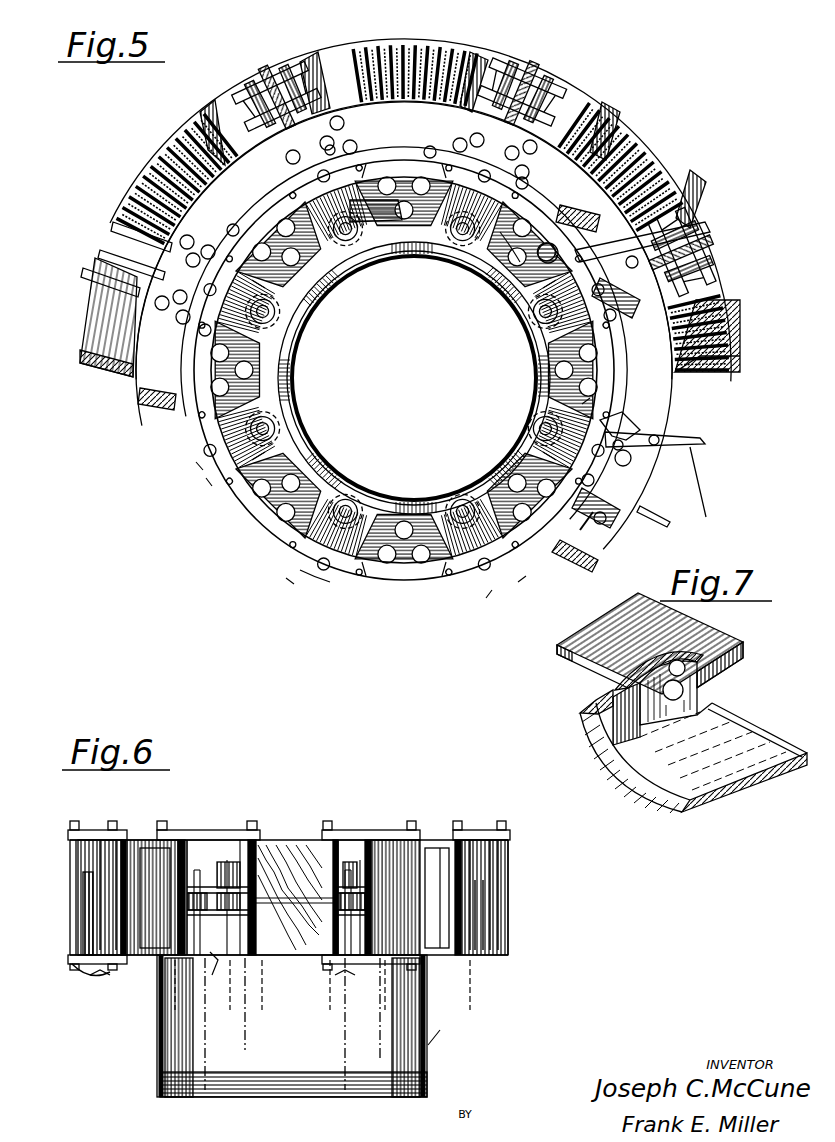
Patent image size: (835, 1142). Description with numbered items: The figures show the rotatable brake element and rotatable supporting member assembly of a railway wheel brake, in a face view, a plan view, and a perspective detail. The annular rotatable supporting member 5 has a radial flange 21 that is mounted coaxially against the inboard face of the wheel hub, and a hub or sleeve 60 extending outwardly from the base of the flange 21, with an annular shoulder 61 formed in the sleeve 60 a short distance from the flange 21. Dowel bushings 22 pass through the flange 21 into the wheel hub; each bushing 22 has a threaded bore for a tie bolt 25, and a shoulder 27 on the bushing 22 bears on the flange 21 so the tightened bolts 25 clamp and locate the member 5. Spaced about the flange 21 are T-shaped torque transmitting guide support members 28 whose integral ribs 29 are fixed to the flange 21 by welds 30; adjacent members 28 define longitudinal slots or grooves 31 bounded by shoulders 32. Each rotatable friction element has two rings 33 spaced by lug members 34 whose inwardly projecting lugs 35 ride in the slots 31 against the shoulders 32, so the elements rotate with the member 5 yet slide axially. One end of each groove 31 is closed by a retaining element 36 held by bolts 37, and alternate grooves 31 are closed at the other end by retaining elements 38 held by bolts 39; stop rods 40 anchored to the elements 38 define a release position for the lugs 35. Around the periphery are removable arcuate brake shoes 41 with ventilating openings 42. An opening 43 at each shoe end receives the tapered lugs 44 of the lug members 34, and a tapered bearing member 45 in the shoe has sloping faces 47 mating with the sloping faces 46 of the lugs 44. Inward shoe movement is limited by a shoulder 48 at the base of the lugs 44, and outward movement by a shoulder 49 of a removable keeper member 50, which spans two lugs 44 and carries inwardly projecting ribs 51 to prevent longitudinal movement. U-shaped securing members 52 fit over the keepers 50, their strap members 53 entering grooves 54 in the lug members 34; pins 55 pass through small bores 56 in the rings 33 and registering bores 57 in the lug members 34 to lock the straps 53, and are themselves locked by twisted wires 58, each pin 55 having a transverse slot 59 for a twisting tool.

In FIG. 5, the rotatable supporting member 5 is at (429, 268).
In FIG. 6, the rotatable supporting member 5 is at (456, 1030).
In FIG. 5, the radial flange 21 is at (328, 580).
In FIG. 6, the radial flange 21 is at (206, 962).
In FIG. 7, the radial flange 21 is at (586, 733).
In FIG. 5, the dowel bushings 22 is at (438, 258).
In FIG. 6, the dowel bushings 22 is at (222, 830).
In FIG. 5, the tie bolt 25 is at (300, 302).
In FIG. 5, the shoulder 27 is at (358, 258).
In FIG. 6, the shoulder 27 is at (340, 906).
In FIG. 5, the T-shaped torque transmitting guide support members 28 is at (242, 212).
In FIG. 6, the T-shaped torque transmitting guide support members 28 is at (145, 845).
In FIG. 7, the T-shaped torque transmitting guide support members 28 is at (605, 620).
In FIG. 5, the integral ribs 29 is at (398, 220).
In FIG. 6, the integral ribs 29 is at (180, 908).
In FIG. 7, the integral ribs 29 is at (660, 725).
In FIG. 5, the welds 30 is at (352, 252).
In FIG. 7, the welds 30 is at (688, 672).
In FIG. 5, the slots or grooves 31 is at (288, 352).
In FIG. 6, the slots or grooves 31 is at (104, 840).
In FIG. 5, the shoulders 32 is at (258, 216).
In FIG. 6, the shoulders 32 is at (190, 955).
In FIG. 7, the shoulders 32 is at (566, 658).
In FIG. 5, the rings 33 is at (578, 216).
In FIG. 5, the lug members 34 is at (633, 550).
In FIG. 5, the inwardly projecting lugs 35 is at (350, 238).
In FIG. 5, the retaining element 36 is at (214, 470).
In FIG. 6, the retaining element 36 is at (72, 836).
In FIG. 6, the bolts 37 is at (76, 822).
In FIG. 5, the retaining elements 38 is at (528, 183).
In FIG. 6, the retaining elements 38 is at (76, 968).
In FIG. 5, the bolts 39 is at (428, 152).
In FIG. 6, the bolts 39 is at (100, 972).
In FIG. 5, the stop rods 40 is at (500, 232).
In FIG. 6, the stop rods 40 is at (83, 898).
In FIG. 5, the brake shoes 41 is at (372, 44).
In FIG. 5, the ventilating openings 42 is at (400, 44).
In FIG. 5, the opening 43 is at (345, 54).
In FIG. 5, the tapered lugs 44 is at (270, 150).
In FIG. 5, the tapered bearing member 45 is at (258, 94).
In FIG. 5, the sloping faces 46 is at (270, 130).
In FIG. 5, the sloping faces 47 is at (312, 120).
In FIG. 5, the shoulder 48 is at (325, 150).
In FIG. 5, the shoulder 49 is at (298, 80).
In FIG. 5, the keeper member 50 is at (306, 60).
In FIG. 5, the inwardly projecting rib 51 is at (490, 60).
In FIG. 5, the U-shaped securing members 52 is at (274, 58).
In FIG. 5, the strap members 53 is at (262, 85).
In FIG. 5, the grooves 54 is at (552, 260).
In FIG. 5, the pins 55 is at (360, 146).
In FIG. 5, the small bores 56 is at (521, 152).
In FIG. 5, the registering bores 57 is at (668, 420).
In FIG. 5, the twisted wires 58 is at (590, 250).
In FIG. 5, the transverse slot 59 is at (468, 144).
In FIG. 5, the supporting member hub or sleeve 60 is at (300, 418).
In FIG. 6, the supporting member hub or sleeve 60 is at (160, 1054).
In FIG. 7, the annular shoulder 61 is at (620, 772).